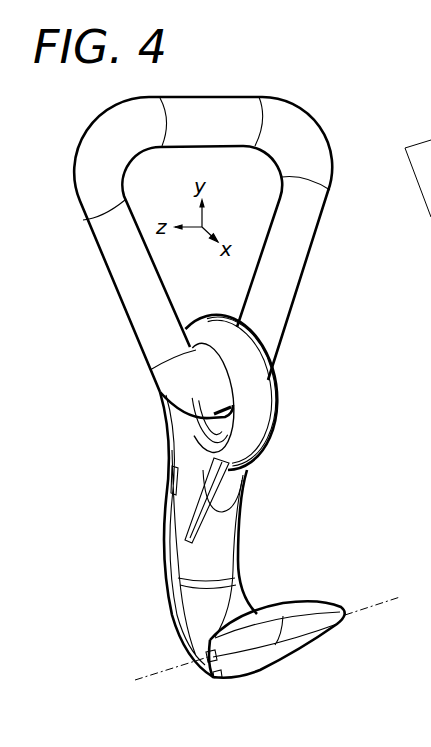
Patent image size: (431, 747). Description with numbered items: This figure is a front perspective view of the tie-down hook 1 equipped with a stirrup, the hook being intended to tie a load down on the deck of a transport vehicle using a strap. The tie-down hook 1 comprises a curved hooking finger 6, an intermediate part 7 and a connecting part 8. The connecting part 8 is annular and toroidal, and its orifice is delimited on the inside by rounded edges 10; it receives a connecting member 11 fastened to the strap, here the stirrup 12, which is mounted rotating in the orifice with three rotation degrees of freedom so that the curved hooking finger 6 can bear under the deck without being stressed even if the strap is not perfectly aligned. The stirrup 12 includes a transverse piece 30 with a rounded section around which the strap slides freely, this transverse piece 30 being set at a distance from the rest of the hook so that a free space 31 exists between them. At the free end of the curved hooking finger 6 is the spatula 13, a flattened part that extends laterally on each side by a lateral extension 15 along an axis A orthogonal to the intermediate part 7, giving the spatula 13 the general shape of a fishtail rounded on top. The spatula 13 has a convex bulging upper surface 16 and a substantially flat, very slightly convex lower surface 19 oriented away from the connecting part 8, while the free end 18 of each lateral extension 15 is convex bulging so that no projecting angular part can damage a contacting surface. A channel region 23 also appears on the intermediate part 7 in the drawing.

The tie-down hook 1 is at (177, 534).
The curved hooking finger 6 is at (187, 534).
The intermediate part 7 is at (195, 534).
The connecting part 8 is at (228, 398).
The rounded edges 10 is at (193, 432).
The connecting member 11 is at (188, 222).
The stirrup 12 is at (188, 222).
The spatula 13 is at (265, 628).
The lateral extension 15 is at (325, 596).
The convex bulging upper surface 16 is at (268, 608).
The free end 18 is at (205, 663).
The lower surface 19 is at (288, 658).
The channel 23 is at (160, 617).
The transverse piece 30 is at (216, 110).
The free space 31 is at (240, 177).
The axis A is at (395, 596).